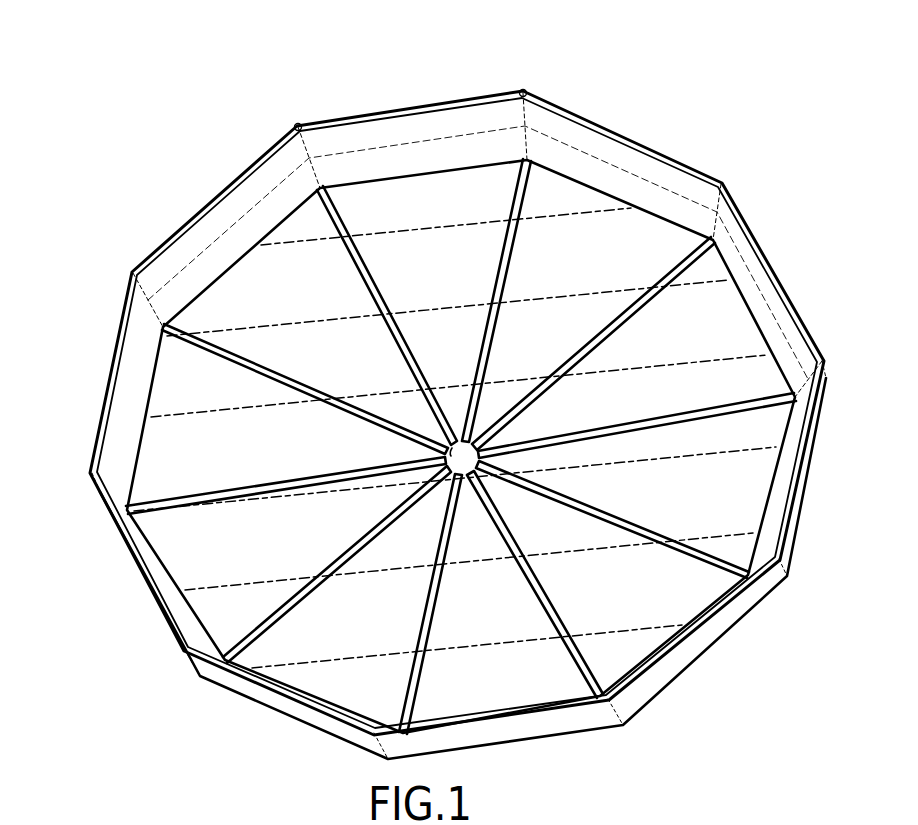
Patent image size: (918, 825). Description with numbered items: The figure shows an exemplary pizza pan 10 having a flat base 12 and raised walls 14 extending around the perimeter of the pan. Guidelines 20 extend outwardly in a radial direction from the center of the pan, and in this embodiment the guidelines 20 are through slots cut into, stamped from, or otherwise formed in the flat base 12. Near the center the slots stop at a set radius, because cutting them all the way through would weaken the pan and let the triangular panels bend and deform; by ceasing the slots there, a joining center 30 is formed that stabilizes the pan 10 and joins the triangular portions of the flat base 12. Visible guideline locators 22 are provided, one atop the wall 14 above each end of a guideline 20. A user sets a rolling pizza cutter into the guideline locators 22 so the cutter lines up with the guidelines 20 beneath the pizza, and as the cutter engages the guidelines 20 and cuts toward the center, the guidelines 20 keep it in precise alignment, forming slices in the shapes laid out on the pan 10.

The pizza pan 10 is at (137, 140).
The flat base 12 is at (242, 565).
The raised walls 14 is at (103, 387).
The guidelines 20 is at (627, 307).
The visible guideline locators 22 is at (300, 125).
The joining center 30 is at (445, 477).